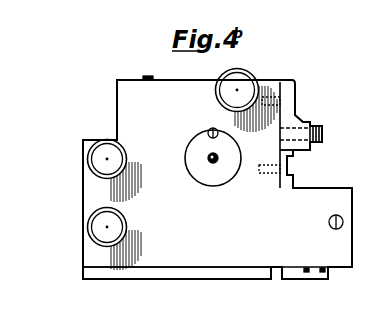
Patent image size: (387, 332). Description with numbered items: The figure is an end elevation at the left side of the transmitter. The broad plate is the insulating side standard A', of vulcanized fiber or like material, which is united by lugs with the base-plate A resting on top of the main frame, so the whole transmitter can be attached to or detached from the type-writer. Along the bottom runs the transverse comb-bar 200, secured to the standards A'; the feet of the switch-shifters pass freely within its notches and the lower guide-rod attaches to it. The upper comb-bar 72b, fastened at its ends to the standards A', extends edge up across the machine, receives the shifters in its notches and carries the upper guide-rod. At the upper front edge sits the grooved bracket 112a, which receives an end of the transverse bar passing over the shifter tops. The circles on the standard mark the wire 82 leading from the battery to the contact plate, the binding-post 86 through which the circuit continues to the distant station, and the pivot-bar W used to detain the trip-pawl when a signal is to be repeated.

The side standard A' is at (217, 177).
The base-plate A is at (177, 291).
The comb-bar 200 is at (312, 279).
The wire 82 is at (102, 160).
The binding-post 86 is at (104, 227).
The pivot-bar W is at (246, 82).
The grooved bracket 112a is at (287, 122).
The comb-bar 72b is at (293, 170).